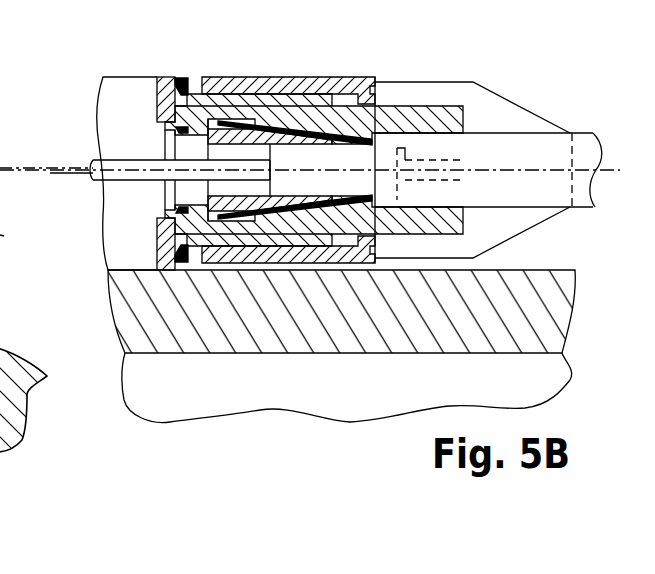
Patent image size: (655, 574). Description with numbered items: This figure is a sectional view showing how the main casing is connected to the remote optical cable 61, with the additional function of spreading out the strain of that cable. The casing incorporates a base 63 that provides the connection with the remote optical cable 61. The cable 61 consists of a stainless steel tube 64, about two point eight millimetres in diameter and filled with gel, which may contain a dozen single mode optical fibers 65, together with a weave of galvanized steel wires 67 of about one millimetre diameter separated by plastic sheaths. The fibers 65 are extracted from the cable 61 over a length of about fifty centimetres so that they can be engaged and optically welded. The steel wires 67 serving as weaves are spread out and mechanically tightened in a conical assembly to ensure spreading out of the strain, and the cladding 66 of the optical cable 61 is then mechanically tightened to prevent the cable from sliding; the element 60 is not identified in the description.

The base plate 60 is at (540, 310).
The remote optical cable 61 is at (532, 140).
The base 63 is at (305, 74).
The stainless steel tube 64 is at (65, 162).
The single mode optical fibers 65 is at (50, 173).
The cladding 66 is at (478, 148).
The galvanized steel wires 67 is at (327, 194).